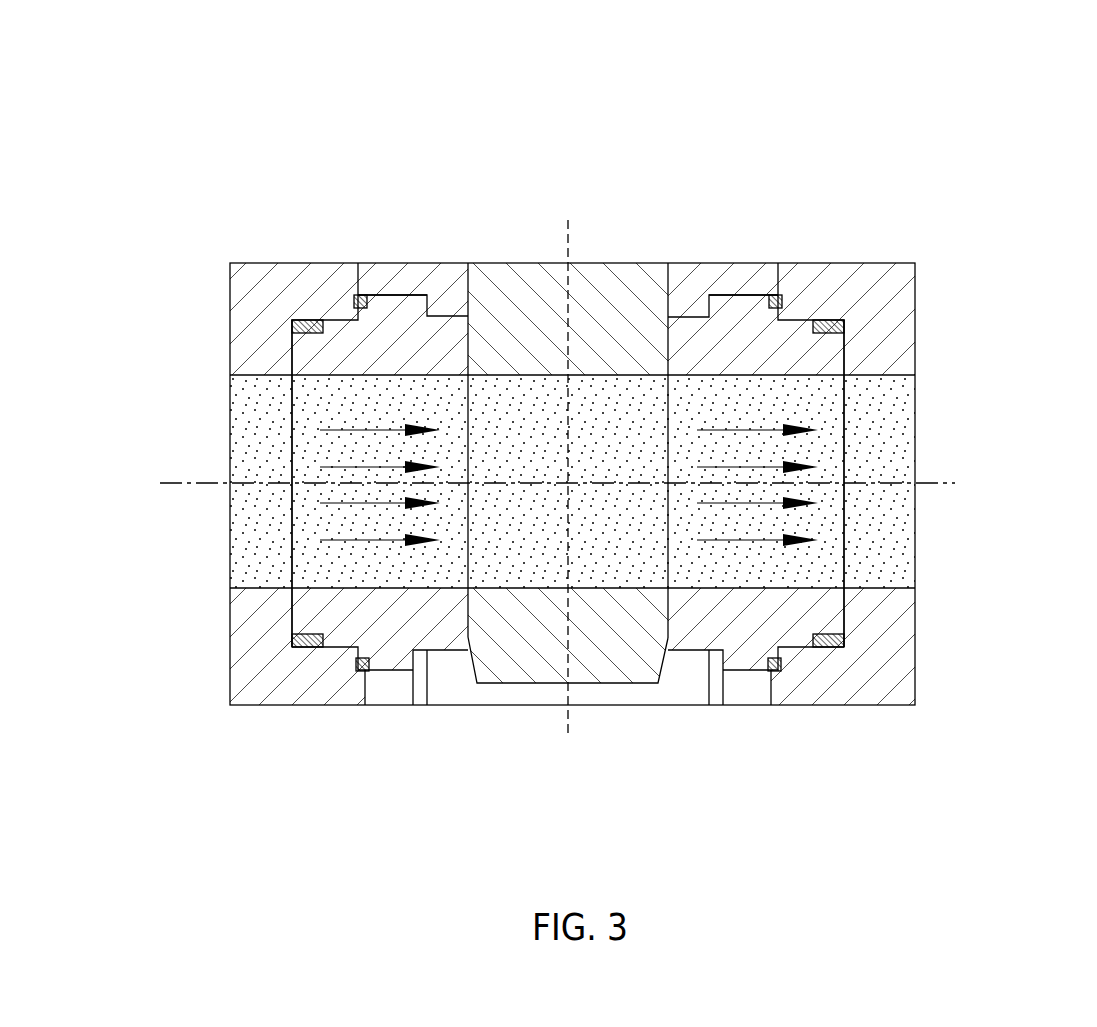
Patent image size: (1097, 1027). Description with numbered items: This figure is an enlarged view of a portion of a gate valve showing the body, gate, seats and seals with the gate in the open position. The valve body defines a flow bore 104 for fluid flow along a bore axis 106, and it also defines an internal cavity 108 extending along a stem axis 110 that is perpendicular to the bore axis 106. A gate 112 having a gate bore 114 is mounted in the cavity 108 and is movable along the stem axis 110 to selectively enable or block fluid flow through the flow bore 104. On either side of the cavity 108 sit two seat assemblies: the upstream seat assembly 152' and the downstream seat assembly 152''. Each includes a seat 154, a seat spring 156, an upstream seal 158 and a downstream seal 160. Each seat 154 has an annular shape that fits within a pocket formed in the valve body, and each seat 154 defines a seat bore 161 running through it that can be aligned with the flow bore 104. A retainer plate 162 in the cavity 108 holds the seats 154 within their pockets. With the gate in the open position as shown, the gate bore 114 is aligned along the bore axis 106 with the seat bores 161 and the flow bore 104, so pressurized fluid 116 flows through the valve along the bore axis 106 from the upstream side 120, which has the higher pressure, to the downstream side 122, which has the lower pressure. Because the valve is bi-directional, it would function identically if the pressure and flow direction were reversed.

The flow bore 104 is at (592, 525).
The bore axis 106 is at (615, 477).
The internal cavity 108 is at (690, 678).
The stem axis 110 is at (578, 359).
The gate 112 is at (569, 733).
The gate bore 114 is at (535, 620).
The pressurized fluid 116 is at (168, 491).
The upstream side 120 is at (126, 413).
The downstream side 122 is at (986, 367).
The upstream seat assembly 152' is at (429, 376).
The downstream seat assembly 152'' is at (804, 335).
The seat 154 is at (620, 190).
The seat spring 156 is at (595, 462).
The upstream seal 158 is at (611, 406).
The downstream seal 160 is at (576, 383).
The seat bore 161 is at (668, 614).
The retainer plate 162 is at (340, 760).